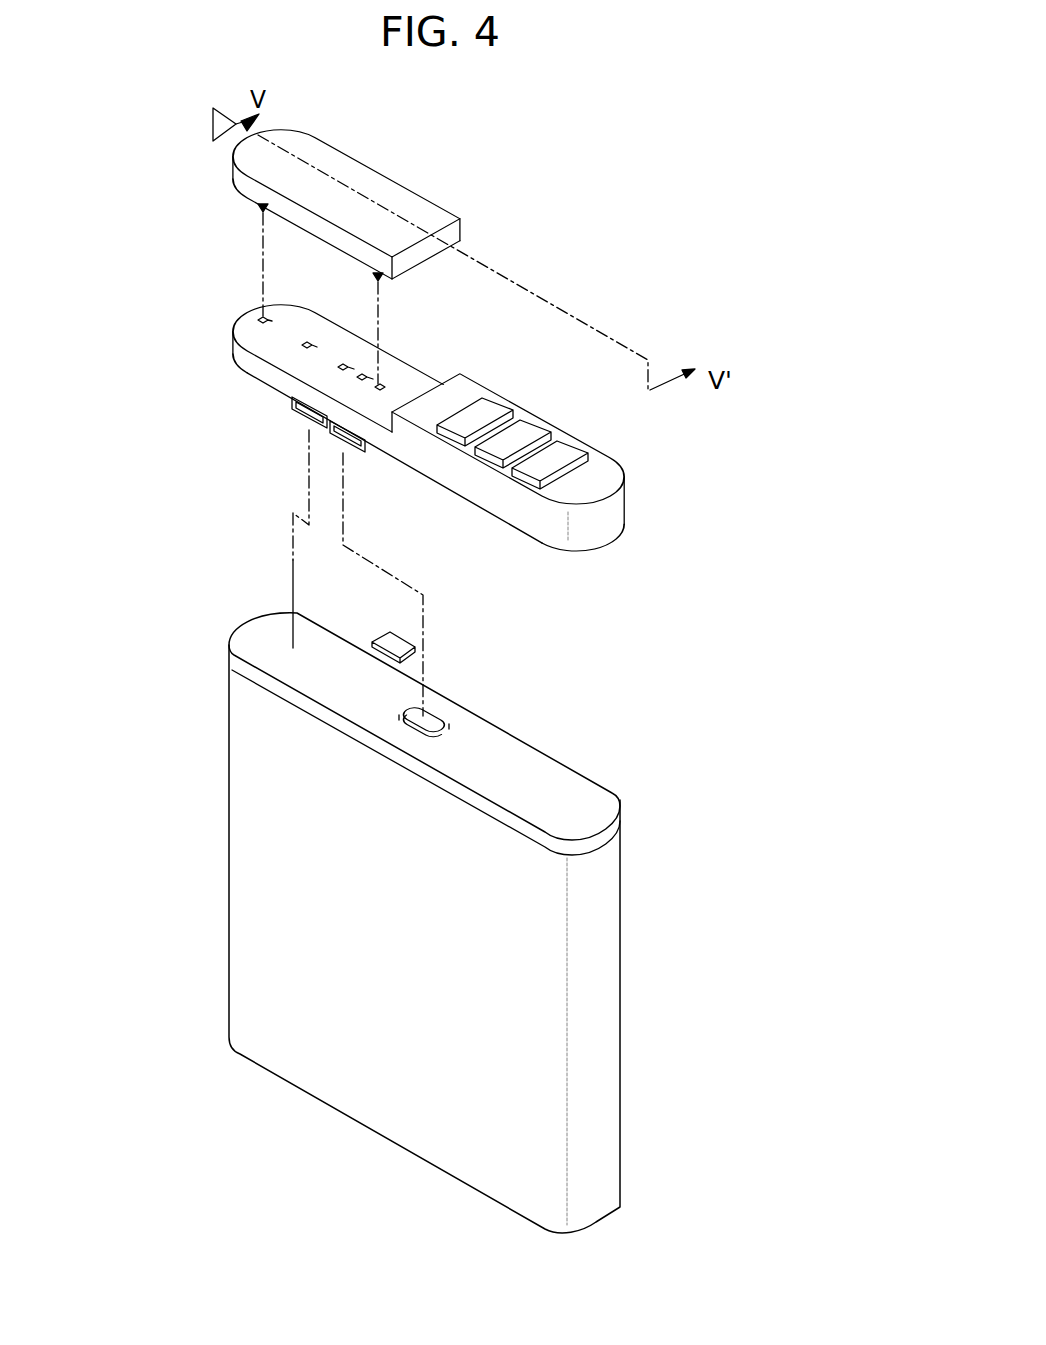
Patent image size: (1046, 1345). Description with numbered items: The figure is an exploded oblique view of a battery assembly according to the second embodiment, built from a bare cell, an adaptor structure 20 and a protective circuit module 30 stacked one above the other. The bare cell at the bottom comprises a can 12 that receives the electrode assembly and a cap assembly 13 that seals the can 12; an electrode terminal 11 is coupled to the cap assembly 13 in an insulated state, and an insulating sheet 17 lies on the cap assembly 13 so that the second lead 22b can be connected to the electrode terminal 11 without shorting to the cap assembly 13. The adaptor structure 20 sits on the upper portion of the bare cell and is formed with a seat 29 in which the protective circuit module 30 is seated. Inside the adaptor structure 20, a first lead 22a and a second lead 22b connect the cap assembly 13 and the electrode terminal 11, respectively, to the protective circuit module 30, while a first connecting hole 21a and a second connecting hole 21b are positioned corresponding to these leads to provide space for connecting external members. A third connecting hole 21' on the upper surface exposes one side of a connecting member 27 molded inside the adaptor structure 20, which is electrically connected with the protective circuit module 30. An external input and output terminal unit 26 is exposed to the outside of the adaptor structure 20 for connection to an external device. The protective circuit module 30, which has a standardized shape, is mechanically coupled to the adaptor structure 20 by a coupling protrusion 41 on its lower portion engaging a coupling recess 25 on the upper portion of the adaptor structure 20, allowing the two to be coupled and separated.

The electrode terminal 11 is at (437, 720).
The can 12 is at (597, 1065).
The cap assembly 13 is at (563, 781).
The insulating sheet 17 is at (385, 637).
The adaptor structure 20 is at (423, 481).
The first connecting hole 21a is at (307, 343).
The second connecting hole 21b is at (343, 366).
The third connecting hole 21' is at (372, 446).
The first lead 22a is at (305, 346).
The second lead 22b is at (343, 368).
The coupling recess 25 is at (262, 318).
The external input and output terminal unit 26 is at (483, 412).
The connecting member 27 is at (363, 377).
The seat 29 is at (263, 340).
The protective circuit module 30 is at (430, 220).
The coupling protrusion 41 is at (260, 208).